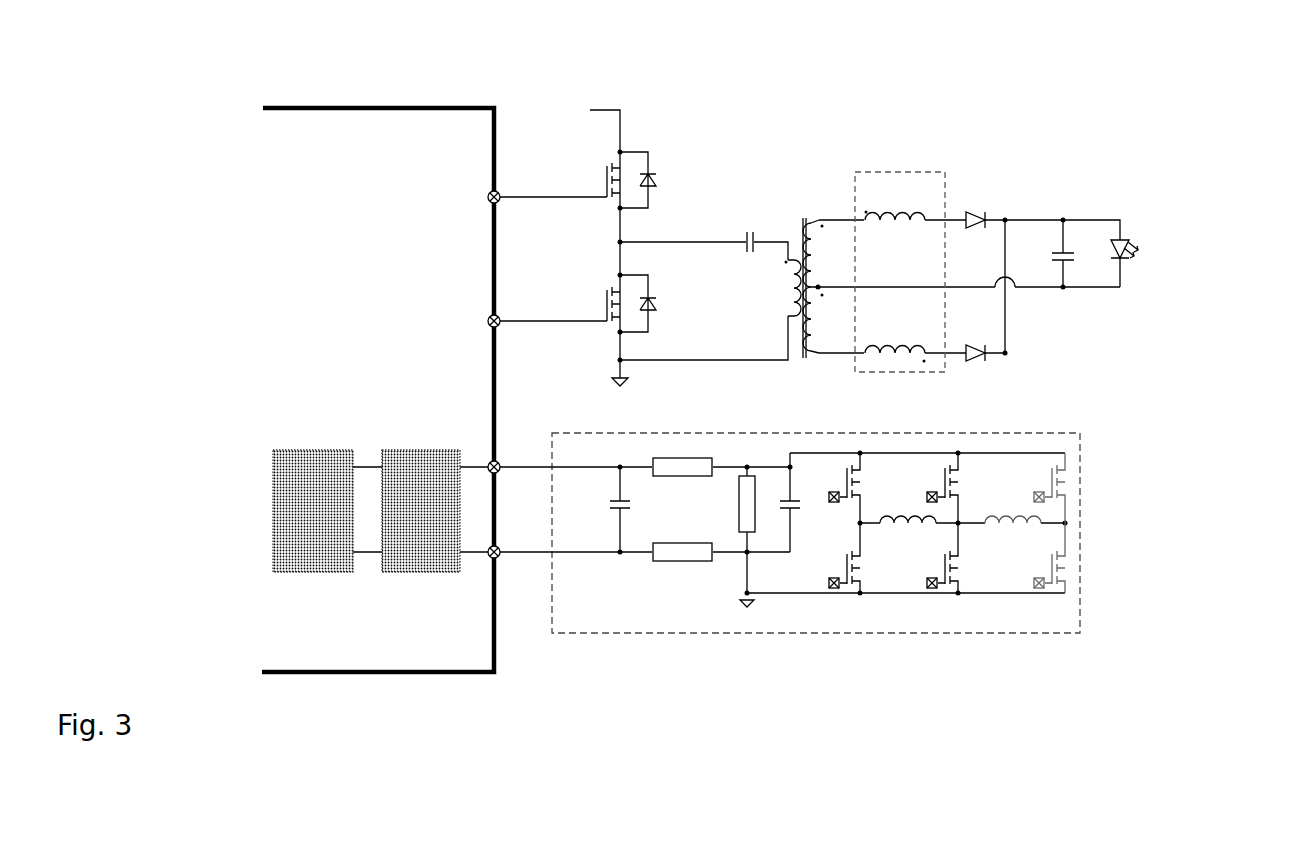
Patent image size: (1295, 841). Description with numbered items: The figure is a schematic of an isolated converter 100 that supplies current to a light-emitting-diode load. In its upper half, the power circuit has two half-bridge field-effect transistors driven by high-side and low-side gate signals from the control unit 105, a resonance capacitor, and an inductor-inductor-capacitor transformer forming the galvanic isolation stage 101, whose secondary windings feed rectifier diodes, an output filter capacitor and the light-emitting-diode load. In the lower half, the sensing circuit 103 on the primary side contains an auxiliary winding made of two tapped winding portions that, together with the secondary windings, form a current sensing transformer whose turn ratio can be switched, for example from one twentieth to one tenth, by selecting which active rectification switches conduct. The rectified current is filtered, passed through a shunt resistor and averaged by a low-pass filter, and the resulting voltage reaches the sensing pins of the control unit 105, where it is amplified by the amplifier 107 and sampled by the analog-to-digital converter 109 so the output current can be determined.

The isolated converter 100 is at (1153, 95).
The galvanic isolation stage 101 is at (800, 225).
The sensing circuit 103 is at (1080, 571).
The control unit 105 is at (338, 105).
The amplifier 107 is at (420, 450).
The analog-to-digital converter (ADC) 109 is at (320, 450).